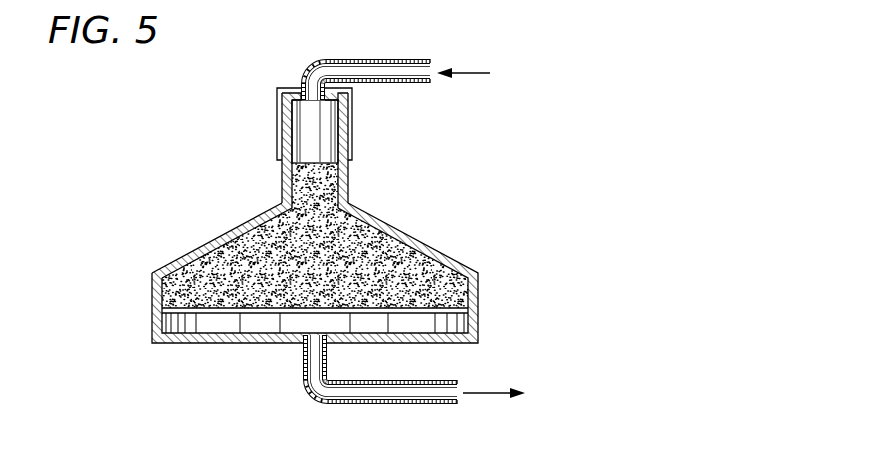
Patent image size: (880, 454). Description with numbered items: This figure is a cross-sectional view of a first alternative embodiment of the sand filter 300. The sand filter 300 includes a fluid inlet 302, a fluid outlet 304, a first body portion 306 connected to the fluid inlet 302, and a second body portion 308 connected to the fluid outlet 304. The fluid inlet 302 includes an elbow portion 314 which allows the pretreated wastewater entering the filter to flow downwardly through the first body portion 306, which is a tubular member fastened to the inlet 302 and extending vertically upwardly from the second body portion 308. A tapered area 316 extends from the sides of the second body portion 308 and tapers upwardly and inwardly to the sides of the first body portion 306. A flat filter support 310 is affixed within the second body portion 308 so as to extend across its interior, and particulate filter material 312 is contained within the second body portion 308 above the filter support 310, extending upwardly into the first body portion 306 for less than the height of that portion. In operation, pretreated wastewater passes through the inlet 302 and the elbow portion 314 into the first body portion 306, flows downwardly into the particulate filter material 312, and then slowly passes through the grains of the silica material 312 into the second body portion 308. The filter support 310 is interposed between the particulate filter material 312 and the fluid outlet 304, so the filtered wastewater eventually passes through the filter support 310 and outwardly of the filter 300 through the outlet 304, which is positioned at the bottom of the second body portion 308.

The sand filter 300 is at (455, 188).
The fluid inlet 302 is at (404, 83).
The fluid outlet 304 is at (303, 378).
The first body portion 306 is at (349, 179).
The second body portion 308 is at (485, 294).
The flat filter support 310 is at (224, 310).
The particulate filter material 312 is at (405, 263).
The elbow portion 314 is at (308, 67).
The tapered area 316 is at (204, 246).